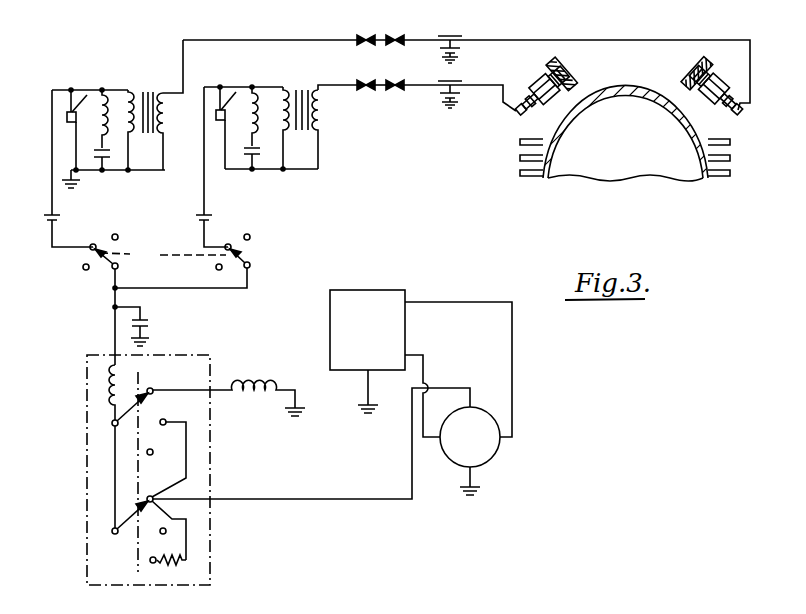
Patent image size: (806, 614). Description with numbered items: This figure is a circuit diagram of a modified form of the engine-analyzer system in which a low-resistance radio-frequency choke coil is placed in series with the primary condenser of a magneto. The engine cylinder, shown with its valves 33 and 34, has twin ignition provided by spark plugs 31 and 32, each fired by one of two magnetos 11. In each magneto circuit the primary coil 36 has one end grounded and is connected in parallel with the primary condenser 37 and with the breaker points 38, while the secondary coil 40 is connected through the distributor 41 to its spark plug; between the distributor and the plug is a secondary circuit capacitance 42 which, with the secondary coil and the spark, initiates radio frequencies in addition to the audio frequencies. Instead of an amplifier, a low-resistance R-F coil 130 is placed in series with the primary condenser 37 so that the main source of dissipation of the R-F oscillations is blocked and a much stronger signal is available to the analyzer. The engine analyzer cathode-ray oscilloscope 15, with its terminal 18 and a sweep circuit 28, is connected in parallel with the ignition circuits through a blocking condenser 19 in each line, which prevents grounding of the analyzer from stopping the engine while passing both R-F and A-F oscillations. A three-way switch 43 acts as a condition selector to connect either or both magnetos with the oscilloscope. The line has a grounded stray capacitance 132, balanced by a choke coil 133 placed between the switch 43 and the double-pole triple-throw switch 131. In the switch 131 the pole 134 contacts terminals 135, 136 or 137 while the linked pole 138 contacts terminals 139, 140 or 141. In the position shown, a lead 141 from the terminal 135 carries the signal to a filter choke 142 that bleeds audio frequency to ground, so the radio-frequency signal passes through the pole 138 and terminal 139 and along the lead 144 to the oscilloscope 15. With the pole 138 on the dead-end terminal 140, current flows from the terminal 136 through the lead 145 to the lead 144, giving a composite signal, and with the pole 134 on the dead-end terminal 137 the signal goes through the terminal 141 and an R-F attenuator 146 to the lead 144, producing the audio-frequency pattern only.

The magneto 11 is at (143, 138).
The engine analyzer cathode-ray oscilloscope 15 is at (490, 451).
The motor terminal 18 is at (470, 405).
The blocking condenser 19 is at (46, 221).
The sweep circuit 28 is at (380, 298).
The spark plug 31 is at (527, 120).
The spark plug 32 is at (728, 119).
The valve 33 is at (575, 105).
The valve 34 is at (680, 100).
The primary coil 36 is at (128, 120).
The primary condenser 37 is at (108, 168).
The breaker points 38 is at (88, 95).
The secondary coil 40 is at (171, 112).
The distributor 41 is at (380, 40).
The secondary circuit capacitance 42 is at (452, 36).
The three-way switch 43 is at (161, 288).
The low-resistance R-F coil 130 is at (105, 100).
The switch 131 is at (190, 363).
The grounded stray capacitance 132 is at (148, 326).
The choke coil 133 is at (108, 392).
The pole 134 is at (133, 395).
The terminal 135 is at (153, 391).
The terminal 136 is at (165, 422).
The dead-end terminal 137 is at (152, 452).
The pole 138 is at (136, 516).
The terminal 139 is at (155, 499).
The dead-end terminal 140 is at (166, 531).
The terminal / lead 141 is at (149, 566).
The filter choke 142 is at (251, 387).
The lead 144 is at (272, 499).
The lead 145 is at (188, 456).
The R-F attenuator 146 is at (178, 565).